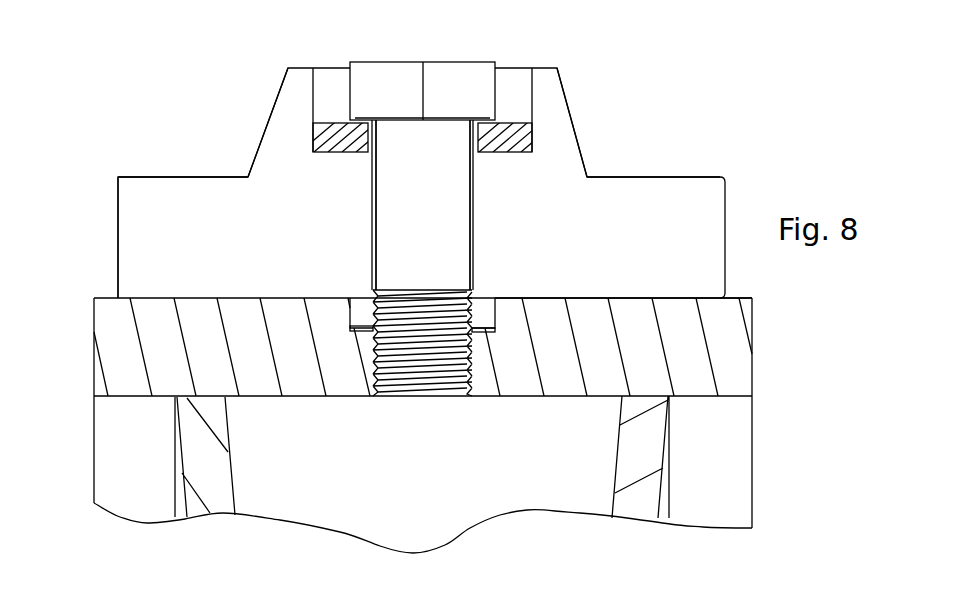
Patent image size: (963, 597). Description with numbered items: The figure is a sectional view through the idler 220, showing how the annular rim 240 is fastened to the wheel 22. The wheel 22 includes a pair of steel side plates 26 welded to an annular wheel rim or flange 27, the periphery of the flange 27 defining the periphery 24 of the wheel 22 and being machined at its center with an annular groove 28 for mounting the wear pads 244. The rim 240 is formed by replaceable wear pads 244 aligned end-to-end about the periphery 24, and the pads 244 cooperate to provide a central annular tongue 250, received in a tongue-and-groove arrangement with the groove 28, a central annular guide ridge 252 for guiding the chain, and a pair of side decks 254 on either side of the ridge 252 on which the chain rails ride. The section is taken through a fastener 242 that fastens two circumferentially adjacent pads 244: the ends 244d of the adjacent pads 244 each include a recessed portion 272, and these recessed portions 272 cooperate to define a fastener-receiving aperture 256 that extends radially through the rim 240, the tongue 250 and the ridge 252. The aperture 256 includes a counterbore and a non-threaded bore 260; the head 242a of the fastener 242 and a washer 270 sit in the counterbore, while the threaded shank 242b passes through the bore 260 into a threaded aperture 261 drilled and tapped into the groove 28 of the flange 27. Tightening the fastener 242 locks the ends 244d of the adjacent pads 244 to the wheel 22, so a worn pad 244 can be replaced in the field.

The idler 220 is at (128, 110).
The annular rim 240 is at (200, 136).
The fastener 242 is at (396, 86).
The head 242a is at (480, 72).
The threaded shank 242b is at (470, 258).
The wear pad 244 is at (577, 171).
The end 244d is at (243, 235).
The central annular tongue 250 is at (352, 327).
The central annular guide ridge 252 is at (284, 120).
The side deck 254 is at (142, 188).
The fastener-receiving aperture 256 is at (532, 105).
The non-threaded bore 260 is at (470, 240).
The threaded aperture 261 is at (450, 365).
The washer 270 is at (527, 140).
The recessed portion 272 is at (473, 182).
The periphery 24 is at (620, 298).
The side plate 26 is at (222, 480).
The annular wheel rim or flange 27 is at (735, 312).
The annular groove 28 is at (350, 312).
The wheel 22 is at (772, 372).